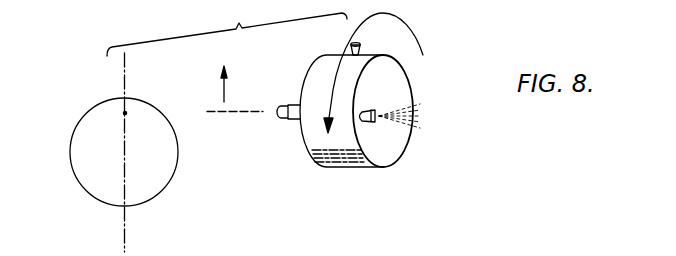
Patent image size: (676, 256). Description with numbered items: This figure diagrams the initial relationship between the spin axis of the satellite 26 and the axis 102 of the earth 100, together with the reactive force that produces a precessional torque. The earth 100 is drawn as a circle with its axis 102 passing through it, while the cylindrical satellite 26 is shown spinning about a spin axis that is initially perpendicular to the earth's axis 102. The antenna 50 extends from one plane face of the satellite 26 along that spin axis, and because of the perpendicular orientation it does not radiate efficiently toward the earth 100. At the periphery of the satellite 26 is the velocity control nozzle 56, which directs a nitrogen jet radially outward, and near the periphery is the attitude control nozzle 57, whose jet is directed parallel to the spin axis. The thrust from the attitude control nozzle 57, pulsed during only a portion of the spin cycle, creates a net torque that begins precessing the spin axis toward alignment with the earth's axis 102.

The satellite 26 is at (398, 91).
The antenna 50 is at (285, 108).
The nozzle 56 is at (360, 46).
The nozzle 57 is at (377, 122).
The earth 100 is at (95, 161).
The axis 102 is at (125, 113).